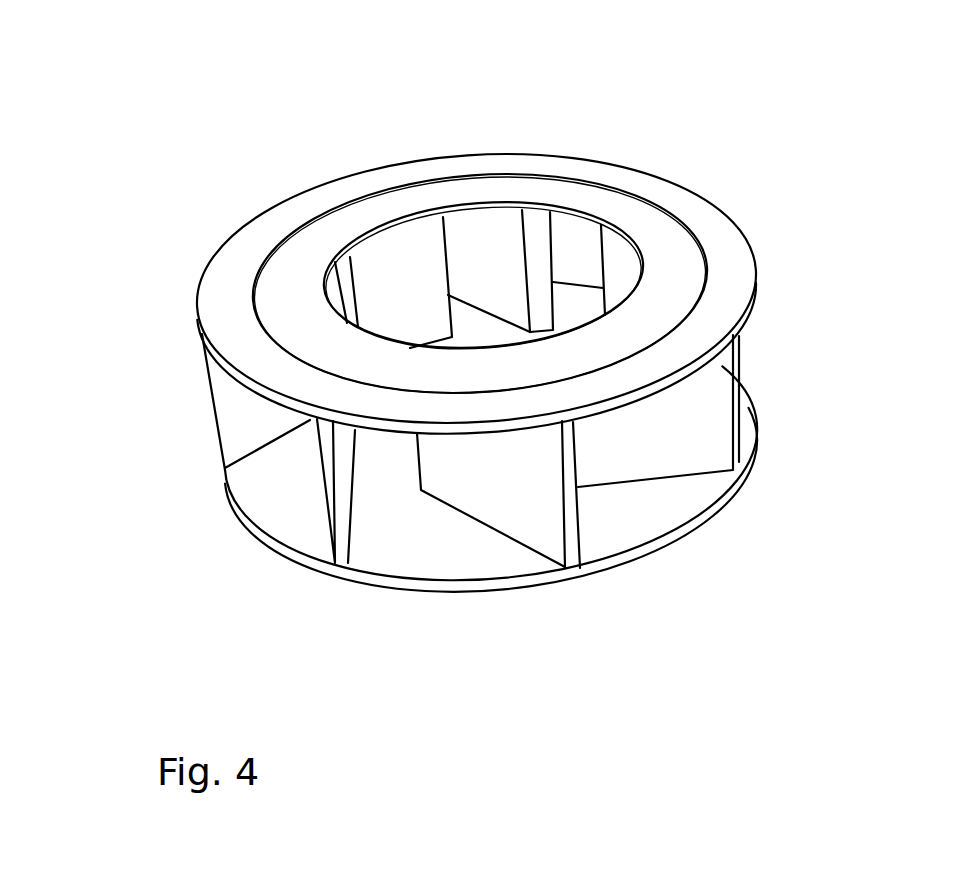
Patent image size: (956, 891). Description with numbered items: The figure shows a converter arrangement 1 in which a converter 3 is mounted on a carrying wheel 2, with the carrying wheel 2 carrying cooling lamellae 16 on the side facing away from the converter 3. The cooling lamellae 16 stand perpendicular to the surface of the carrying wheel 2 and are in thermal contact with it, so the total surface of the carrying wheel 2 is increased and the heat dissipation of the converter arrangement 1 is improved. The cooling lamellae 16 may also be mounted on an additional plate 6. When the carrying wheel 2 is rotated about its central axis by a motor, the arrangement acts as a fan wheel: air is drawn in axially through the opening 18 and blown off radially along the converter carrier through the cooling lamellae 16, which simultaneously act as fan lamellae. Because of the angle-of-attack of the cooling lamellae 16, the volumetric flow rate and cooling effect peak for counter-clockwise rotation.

The converter arrangement 1 is at (438, 375).
The carrying wheel 2 is at (661, 252).
The converter 3 is at (238, 272).
The additional plate 6 is at (285, 475).
The cooling lamellae 16 is at (682, 417).
The opening 18 is at (477, 207).